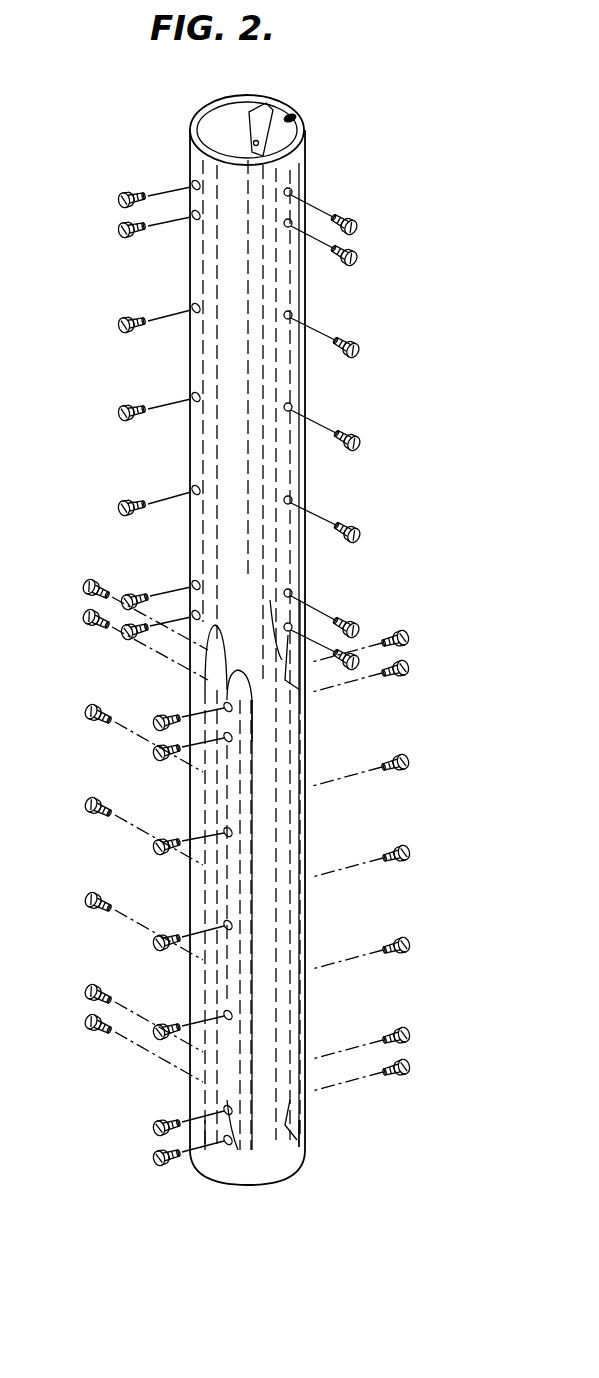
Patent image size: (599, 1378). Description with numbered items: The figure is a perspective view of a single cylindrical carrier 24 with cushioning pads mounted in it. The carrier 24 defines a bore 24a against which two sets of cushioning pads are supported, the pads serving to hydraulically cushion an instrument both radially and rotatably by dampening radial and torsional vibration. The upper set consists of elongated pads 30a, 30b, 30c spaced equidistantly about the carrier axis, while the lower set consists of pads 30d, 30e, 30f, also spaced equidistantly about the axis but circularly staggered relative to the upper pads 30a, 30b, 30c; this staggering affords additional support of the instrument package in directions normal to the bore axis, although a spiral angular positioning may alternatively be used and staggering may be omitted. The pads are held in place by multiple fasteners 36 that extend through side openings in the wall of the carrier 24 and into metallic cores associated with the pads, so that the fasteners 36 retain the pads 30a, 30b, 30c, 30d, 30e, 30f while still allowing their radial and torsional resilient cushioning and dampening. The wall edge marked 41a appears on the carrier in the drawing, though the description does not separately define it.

The carrier 24 is at (318, 390).
The bore 24a is at (298, 122).
The pad 30a is at (248, 150).
The pad 30b is at (290, 172).
The pad 30c is at (200, 267).
The pad 30d is at (208, 693).
The pad 30e is at (293, 822).
The pad 30f is at (252, 742).
The fasteners 36 is at (125, 392).
The housing edge 41a is at (308, 478).